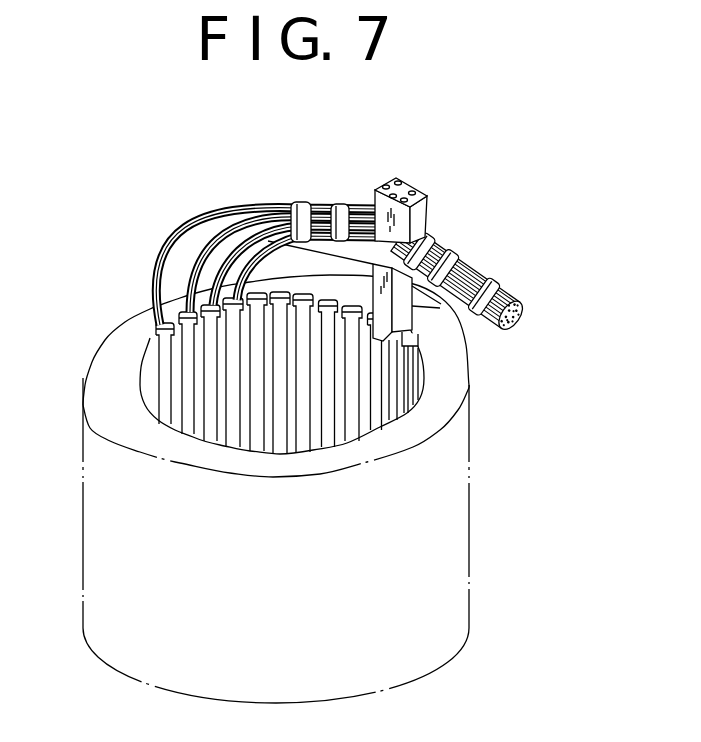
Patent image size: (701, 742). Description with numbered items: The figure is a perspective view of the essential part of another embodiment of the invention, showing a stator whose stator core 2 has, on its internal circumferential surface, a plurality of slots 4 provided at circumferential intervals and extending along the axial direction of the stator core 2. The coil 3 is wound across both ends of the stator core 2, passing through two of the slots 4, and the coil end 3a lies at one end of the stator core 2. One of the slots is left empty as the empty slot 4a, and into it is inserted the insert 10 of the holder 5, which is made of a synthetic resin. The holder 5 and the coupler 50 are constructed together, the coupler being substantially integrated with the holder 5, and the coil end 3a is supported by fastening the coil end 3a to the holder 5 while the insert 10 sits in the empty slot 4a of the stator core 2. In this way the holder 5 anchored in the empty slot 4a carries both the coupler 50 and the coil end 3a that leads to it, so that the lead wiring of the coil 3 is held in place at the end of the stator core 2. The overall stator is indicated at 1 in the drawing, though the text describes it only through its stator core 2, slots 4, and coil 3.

The stator core 1 is at (107, 303).
The stator core 2 is at (113, 360).
The coil 3 is at (165, 261).
The coil end 3a is at (480, 270).
The slots 4 is at (220, 393).
The empty slot 4a is at (397, 409).
The holder 5 is at (430, 306).
The insert 10 is at (363, 275).
The coupler 50 is at (428, 211).